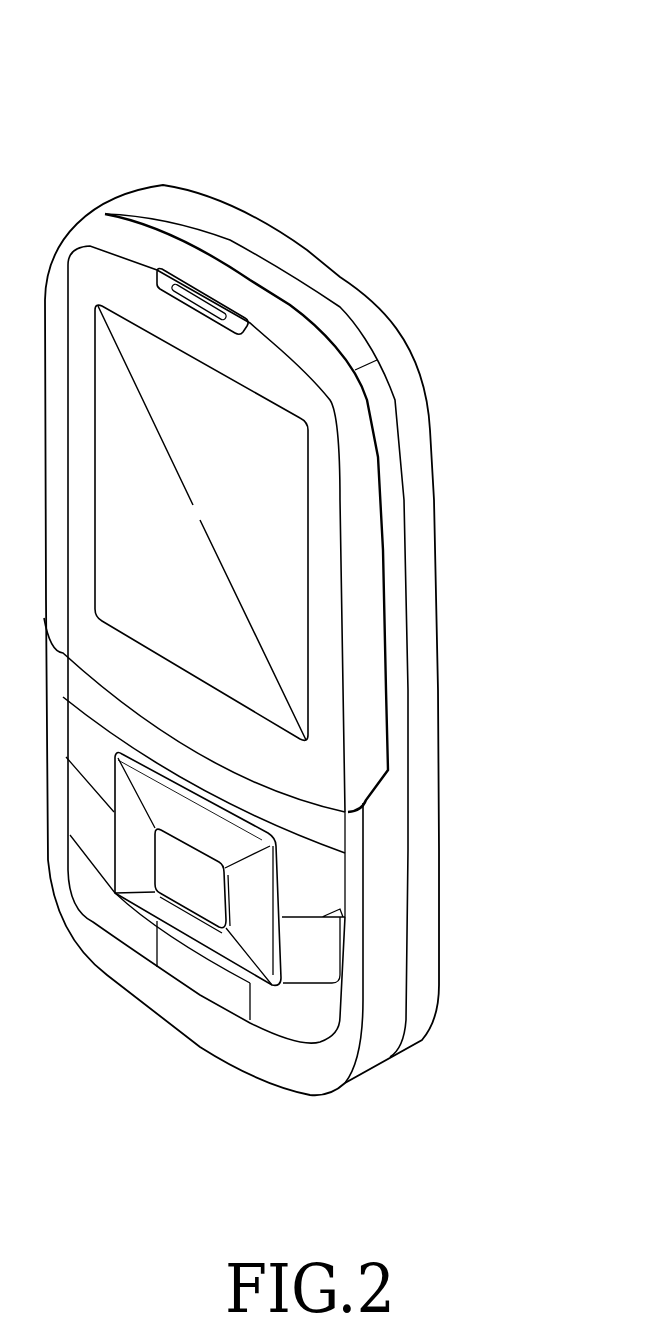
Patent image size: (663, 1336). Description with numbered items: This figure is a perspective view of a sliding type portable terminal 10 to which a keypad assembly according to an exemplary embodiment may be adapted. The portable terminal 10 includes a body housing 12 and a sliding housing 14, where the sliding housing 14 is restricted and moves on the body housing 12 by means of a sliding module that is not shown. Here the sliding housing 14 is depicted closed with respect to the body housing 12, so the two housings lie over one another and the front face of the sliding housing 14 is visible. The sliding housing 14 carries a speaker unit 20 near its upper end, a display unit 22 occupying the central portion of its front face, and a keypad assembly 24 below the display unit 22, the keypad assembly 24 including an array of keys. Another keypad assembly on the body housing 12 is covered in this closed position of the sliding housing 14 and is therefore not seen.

The portable terminal 10 is at (381, 33).
The body housing 12 is at (452, 590).
The sliding housing 14 is at (345, 465).
The speaker unit 20 is at (187, 285).
The display unit 22 is at (283, 632).
The keypad assembly 24 is at (305, 880).